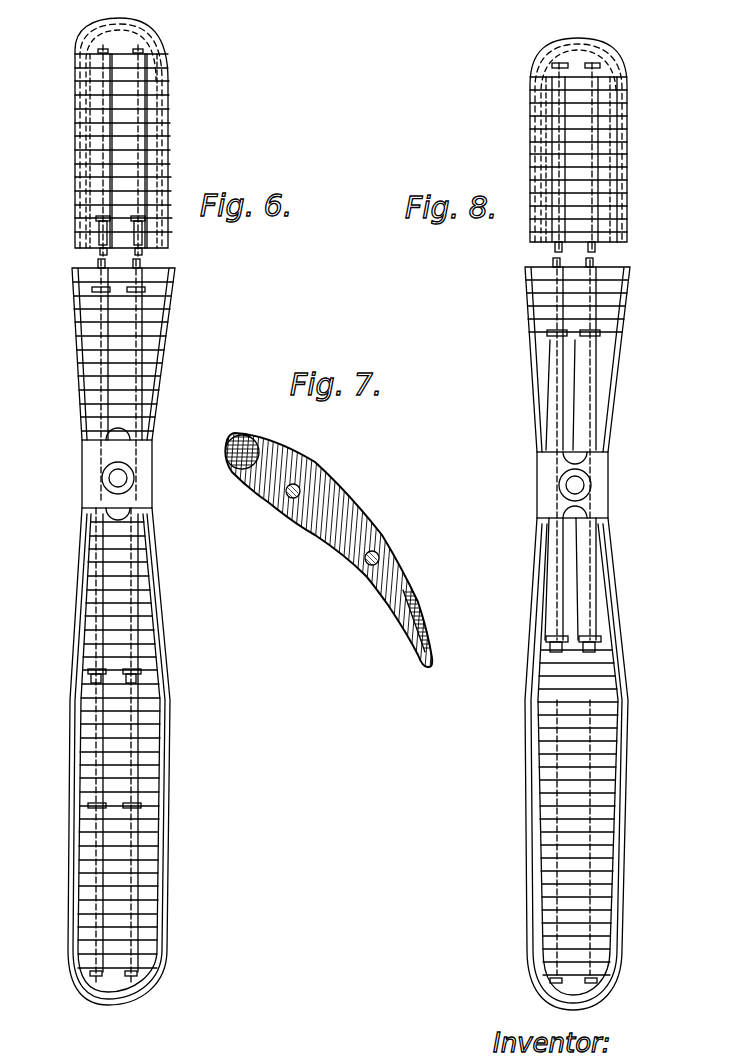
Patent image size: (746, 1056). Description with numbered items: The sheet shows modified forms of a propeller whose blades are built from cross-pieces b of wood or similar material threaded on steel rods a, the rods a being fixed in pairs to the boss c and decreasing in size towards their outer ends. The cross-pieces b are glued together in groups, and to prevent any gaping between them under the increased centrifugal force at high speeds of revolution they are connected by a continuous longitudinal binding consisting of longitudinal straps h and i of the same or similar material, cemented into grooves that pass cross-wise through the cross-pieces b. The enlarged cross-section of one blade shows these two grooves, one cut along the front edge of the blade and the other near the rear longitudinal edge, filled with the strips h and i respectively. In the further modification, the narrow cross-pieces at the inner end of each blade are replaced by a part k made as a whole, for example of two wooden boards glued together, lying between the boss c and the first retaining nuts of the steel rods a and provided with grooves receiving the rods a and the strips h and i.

In FIG. 6, the steel rods a is at (105, 370).
In FIG. 7, the steel rods a is at (291, 500).
In FIG. 8, the steel rods a is at (540, 252).
In FIG. 6, the cross-pieces b is at (150, 225).
In FIG. 7, the cross-pieces b is at (345, 512).
In FIG. 8, the cross-pieces b is at (605, 215).
In FIG. 6, the boss c is at (150, 480).
In FIG. 8, the boss c is at (535, 479).
In FIG. 6, the longitudinal strap h is at (90, 805).
In FIG. 7, the longitudinal strap h is at (236, 436).
In FIG. 8, the longitudinal strap h is at (530, 678).
In FIG. 6, the longitudinal strap i is at (155, 805).
In FIG. 7, the longitudinal strap i is at (420, 620).
In FIG. 8, the longitudinal strap i is at (598, 568).
In FIG. 8, the parts k is at (578, 403).